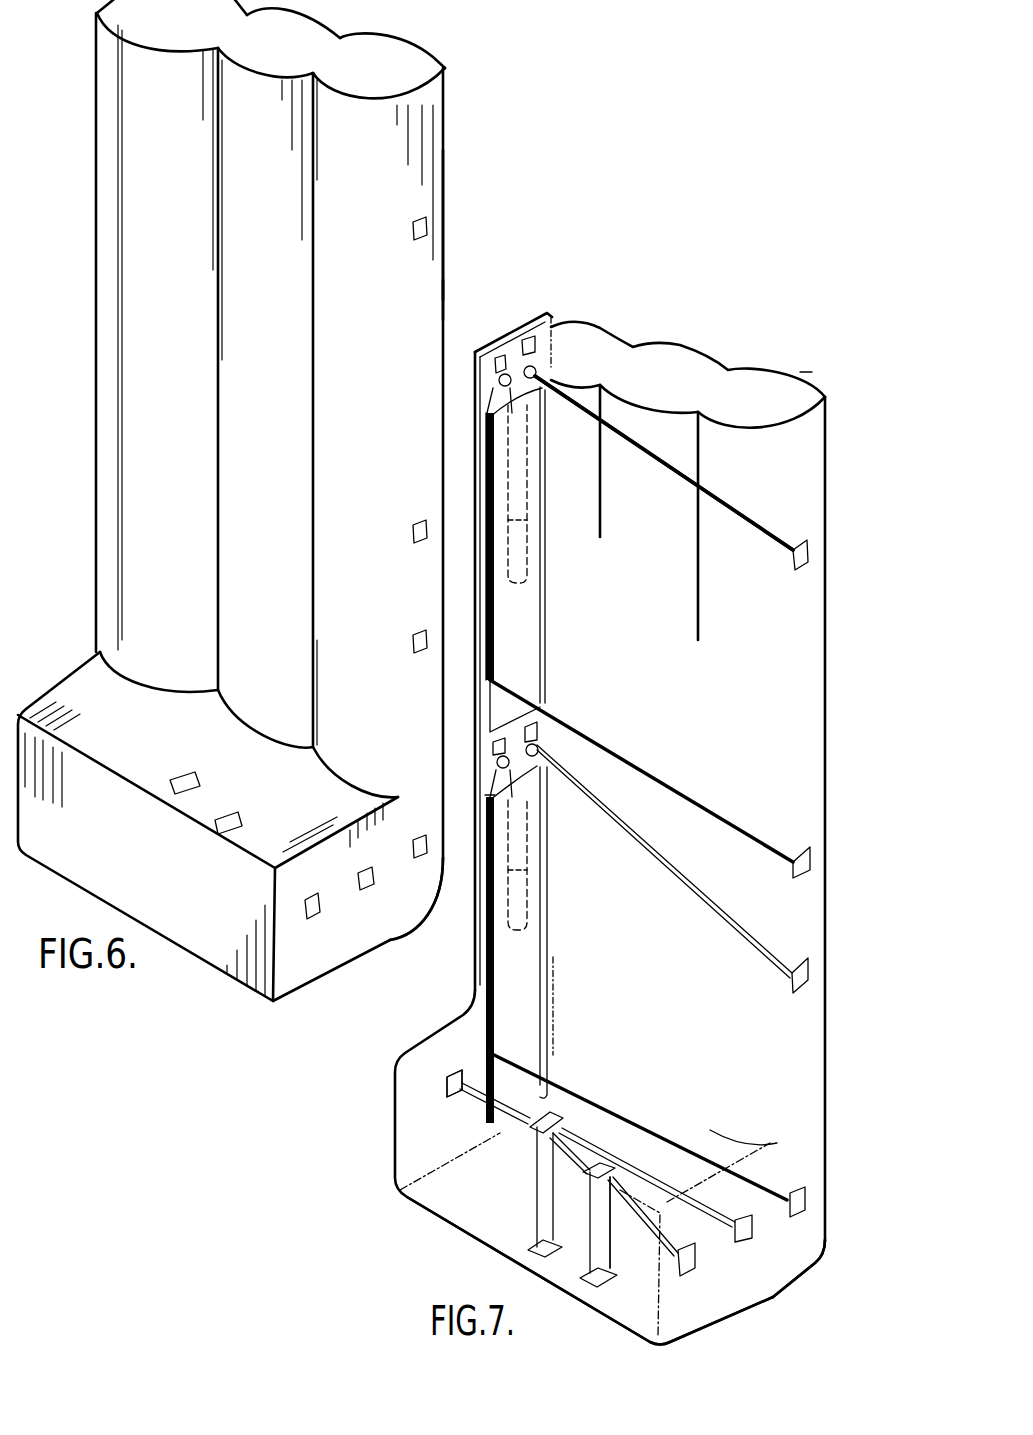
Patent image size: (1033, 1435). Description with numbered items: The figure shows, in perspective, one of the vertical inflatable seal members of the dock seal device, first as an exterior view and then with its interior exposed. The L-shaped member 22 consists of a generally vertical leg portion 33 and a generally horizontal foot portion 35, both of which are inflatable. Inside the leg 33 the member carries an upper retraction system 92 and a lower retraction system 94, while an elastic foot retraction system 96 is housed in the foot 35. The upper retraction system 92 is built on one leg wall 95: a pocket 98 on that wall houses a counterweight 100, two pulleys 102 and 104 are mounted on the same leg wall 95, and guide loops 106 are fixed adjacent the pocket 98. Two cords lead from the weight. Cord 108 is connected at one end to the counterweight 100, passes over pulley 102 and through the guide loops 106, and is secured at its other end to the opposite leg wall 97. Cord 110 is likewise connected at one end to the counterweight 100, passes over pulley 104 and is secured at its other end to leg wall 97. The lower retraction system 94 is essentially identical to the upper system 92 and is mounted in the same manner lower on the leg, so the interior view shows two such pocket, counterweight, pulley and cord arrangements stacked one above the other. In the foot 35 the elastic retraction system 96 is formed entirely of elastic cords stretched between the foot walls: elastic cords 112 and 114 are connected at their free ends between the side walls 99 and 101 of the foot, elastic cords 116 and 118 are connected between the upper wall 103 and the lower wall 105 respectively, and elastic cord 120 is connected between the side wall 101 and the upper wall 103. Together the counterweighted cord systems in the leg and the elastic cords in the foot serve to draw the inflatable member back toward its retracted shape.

In FIG. 6, the L-shaped member 22 is at (449, 231).
In FIG. 7, the L-shaped member 22 is at (806, 367).
In FIG. 6, the leg portion 33 is at (447, 300).
In FIG. 7, the leg portion 33 is at (808, 573).
In FIG. 6, the foot portion 35 is at (203, 943).
In FIG. 7, the foot portion 35 is at (755, 1295).
In FIG. 7, the upper retraction system 92 is at (563, 376).
In FIG. 7, the lower retraction system 94 is at (477, 873).
In FIG. 7, the leg wall 95 is at (487, 500).
In FIG. 7, the elastic foot retraction system 96 is at (455, 1094).
In FIG. 6, the leg wall 97 is at (385, 353).
In FIG. 7, the leg wall 97 is at (732, 457).
In FIG. 7, the pocket 98 is at (525, 633).
In FIG. 7, the side wall 99 is at (408, 1103).
In FIG. 7, the counterweight 100 is at (525, 577).
In FIG. 6, the side wall 101 is at (368, 923).
In FIG. 7, the side wall 101 is at (777, 1242).
In FIG. 7, the pulley 102 is at (498, 356).
In FIG. 6, the upper wall 103 is at (268, 838).
In FIG. 7, the pulley 104 is at (555, 343).
In FIG. 7, the lower wall 105 is at (562, 1273).
In FIG. 7, the guide loops 106 is at (488, 515).
In FIG. 7, the cord 108 is at (707, 807).
In FIG. 7, the cord 110 is at (730, 495).
In FIG. 7, the elastic cord 112 is at (667, 1253).
In FIG. 7, the elastic cord 114 is at (461, 1100).
In FIG. 7, the elastic cord 116 is at (535, 1183).
In FIG. 7, the elastic cord 118 is at (580, 1280).
In FIG. 7, the elastic cord 120 is at (610, 1220).